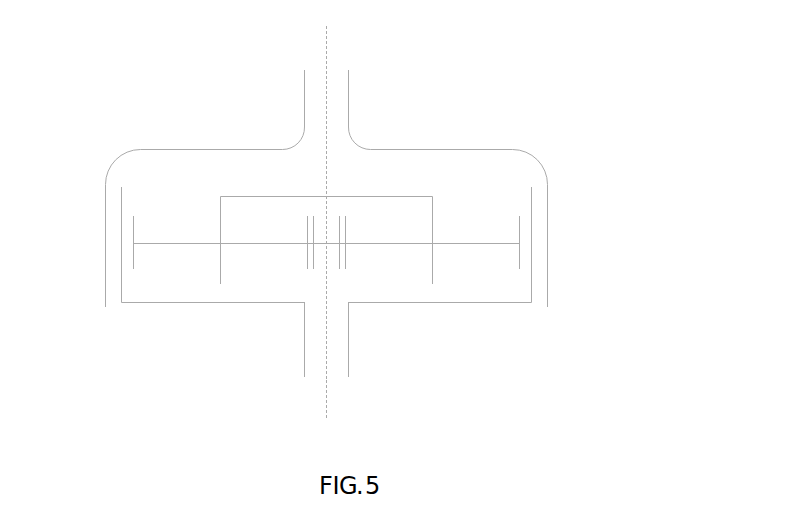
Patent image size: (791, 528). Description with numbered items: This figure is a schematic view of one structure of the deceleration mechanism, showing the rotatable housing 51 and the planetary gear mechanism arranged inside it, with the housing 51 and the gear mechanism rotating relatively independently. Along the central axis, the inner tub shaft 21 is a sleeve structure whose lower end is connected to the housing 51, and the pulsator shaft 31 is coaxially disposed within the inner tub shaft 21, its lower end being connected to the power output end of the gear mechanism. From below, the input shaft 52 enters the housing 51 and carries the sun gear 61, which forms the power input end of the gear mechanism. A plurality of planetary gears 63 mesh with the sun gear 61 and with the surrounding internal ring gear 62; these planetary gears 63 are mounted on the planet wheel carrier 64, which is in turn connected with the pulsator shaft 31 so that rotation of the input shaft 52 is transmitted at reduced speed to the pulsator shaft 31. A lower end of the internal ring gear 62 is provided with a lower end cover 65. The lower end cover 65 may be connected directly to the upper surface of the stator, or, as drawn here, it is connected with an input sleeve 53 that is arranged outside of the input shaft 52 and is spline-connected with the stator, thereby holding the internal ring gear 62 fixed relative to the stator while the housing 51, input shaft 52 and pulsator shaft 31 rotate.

The inner tub shaft 21 is at (348, 80).
The pulsator shaft 31 is at (327, 128).
The housing 51 is at (465, 149).
The input shaft 52 is at (327, 378).
The input sleeve 53 is at (303, 348).
The sun gear 61 is at (332, 245).
The internal ring gear 62 is at (531, 268).
The planetary gear 63 is at (200, 243).
The planet wheel carrier 64 is at (248, 196).
The lower end cover 65 is at (463, 302).